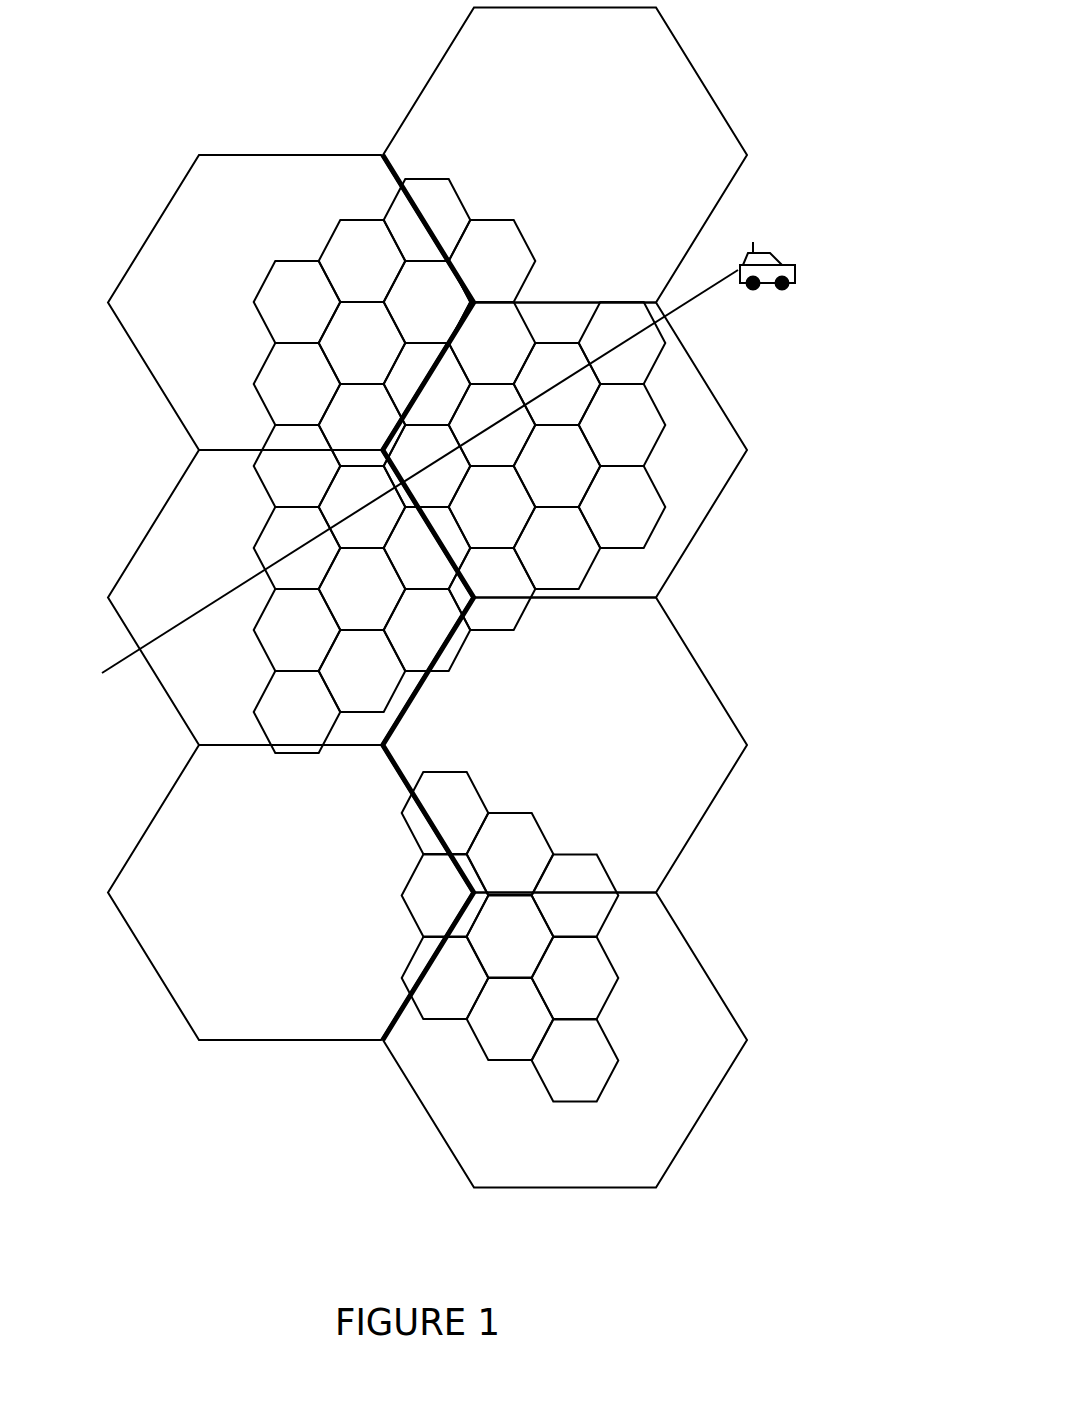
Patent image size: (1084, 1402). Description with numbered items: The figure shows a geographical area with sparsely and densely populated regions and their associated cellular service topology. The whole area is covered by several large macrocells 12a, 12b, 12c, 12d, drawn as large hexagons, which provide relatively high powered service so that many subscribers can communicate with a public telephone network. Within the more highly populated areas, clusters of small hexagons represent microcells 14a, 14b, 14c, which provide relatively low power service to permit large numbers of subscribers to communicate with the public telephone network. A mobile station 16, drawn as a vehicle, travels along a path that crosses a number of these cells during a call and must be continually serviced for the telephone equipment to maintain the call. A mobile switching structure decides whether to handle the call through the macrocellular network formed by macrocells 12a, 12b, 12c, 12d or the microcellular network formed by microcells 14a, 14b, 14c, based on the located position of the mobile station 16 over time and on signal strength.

The macrocell 12a is at (212, 294).
The macrocell 12b is at (628, 178).
The macrocell 12c is at (220, 549).
The macrocell 12d is at (718, 460).
The microcell 14a is at (448, 320).
The microcell 14b is at (383, 278).
The microcell 14c is at (383, 362).
The mobile station 16 is at (771, 289).